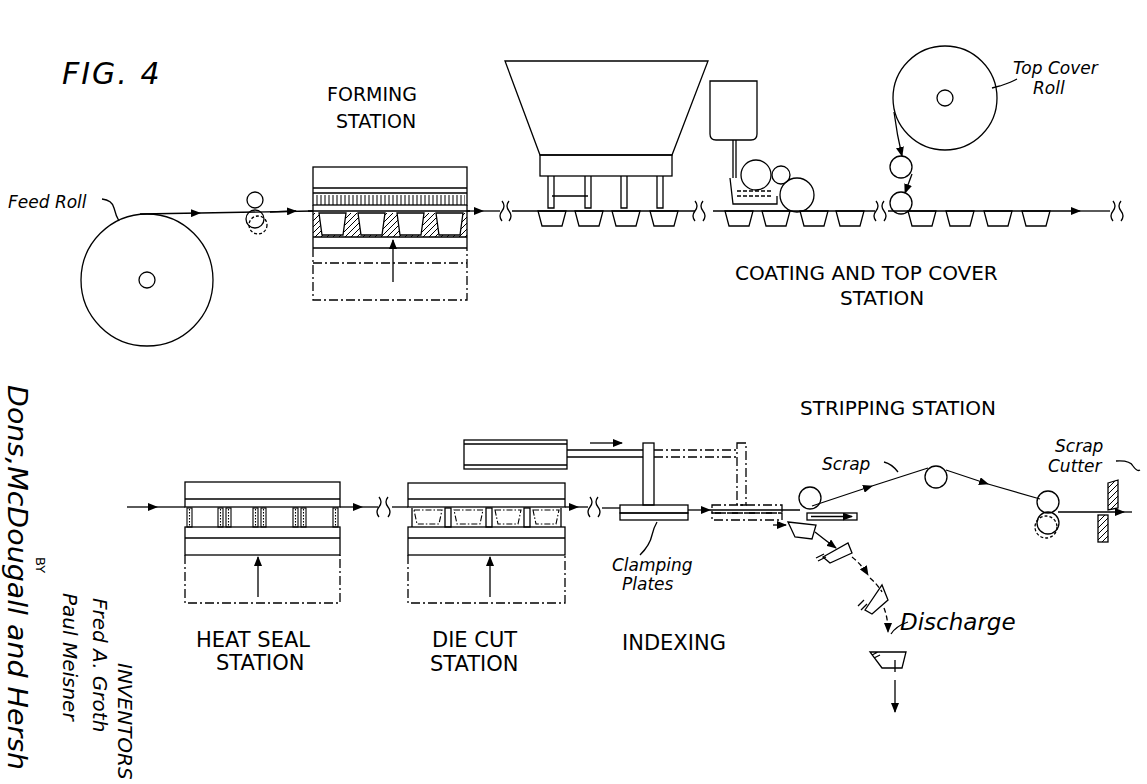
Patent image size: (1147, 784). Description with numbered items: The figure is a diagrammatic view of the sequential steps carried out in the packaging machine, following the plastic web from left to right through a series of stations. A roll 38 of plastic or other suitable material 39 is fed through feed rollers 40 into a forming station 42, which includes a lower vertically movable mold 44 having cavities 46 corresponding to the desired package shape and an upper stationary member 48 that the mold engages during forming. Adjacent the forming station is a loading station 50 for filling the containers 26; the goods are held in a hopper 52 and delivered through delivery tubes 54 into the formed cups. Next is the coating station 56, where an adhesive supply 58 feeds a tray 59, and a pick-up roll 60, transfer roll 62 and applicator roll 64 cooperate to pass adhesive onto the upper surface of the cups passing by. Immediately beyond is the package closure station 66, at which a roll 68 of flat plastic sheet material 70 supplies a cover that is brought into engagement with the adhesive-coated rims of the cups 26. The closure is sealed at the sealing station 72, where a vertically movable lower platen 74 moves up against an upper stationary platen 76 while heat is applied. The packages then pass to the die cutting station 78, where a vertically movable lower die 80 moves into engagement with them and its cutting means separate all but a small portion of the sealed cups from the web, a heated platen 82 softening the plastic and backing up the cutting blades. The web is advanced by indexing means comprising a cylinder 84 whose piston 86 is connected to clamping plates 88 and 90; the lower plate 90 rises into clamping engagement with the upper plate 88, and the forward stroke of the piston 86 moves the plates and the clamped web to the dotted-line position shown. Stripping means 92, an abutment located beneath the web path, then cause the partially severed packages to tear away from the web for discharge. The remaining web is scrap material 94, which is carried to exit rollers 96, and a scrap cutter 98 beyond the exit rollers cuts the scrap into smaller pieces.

The package 26 is at (587, 222).
The roll 38 is at (81, 262).
The plastic material 39 is at (183, 210).
The feed rollers 40 is at (256, 192).
The forming station 42 is at (384, 215).
The lower vertically movable mold 44 is at (384, 256).
The cavities 46 is at (332, 218).
The upper stationary member 48 is at (440, 178).
The loading station 50 is at (623, 250).
The hopper 52 is at (520, 92).
The delivery tubes 54 is at (550, 196).
The coating station 56 is at (766, 130).
The adhesive supply 58 is at (736, 88).
The tray 59 is at (732, 198).
The pick-up roll 60 is at (753, 163).
The transfer roll 62 is at (789, 171).
The applicator roll 64 is at (804, 190).
The package closure station 66 is at (1015, 184).
The roll of flat plastic sheet material 68 is at (978, 121).
The flat plastic sheet material 70 is at (898, 137).
The sealing station 72 is at (238, 521).
The vertically movable lower platen 74 is at (195, 540).
The upper stationary platen 76 is at (250, 490).
The die cut station 78 is at (467, 517).
The vertically movable lower die 80 is at (418, 543).
The heated platen 82 is at (413, 494).
The cylinder 84 is at (506, 452).
The piston 86 is at (640, 448).
The upper clamping plate 88 is at (665, 506).
The lower clamping plate 90 is at (683, 521).
The stripping means 92 is at (848, 522).
The scrap material 94 is at (904, 475).
The exit rollers 96 is at (1045, 492).
The scrap cutter 98 is at (1119, 495).